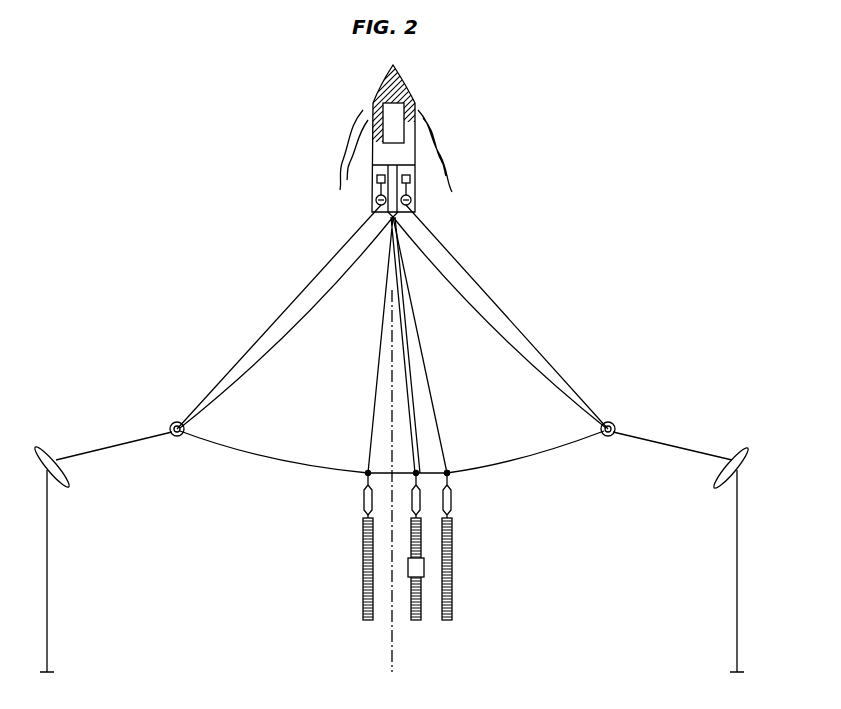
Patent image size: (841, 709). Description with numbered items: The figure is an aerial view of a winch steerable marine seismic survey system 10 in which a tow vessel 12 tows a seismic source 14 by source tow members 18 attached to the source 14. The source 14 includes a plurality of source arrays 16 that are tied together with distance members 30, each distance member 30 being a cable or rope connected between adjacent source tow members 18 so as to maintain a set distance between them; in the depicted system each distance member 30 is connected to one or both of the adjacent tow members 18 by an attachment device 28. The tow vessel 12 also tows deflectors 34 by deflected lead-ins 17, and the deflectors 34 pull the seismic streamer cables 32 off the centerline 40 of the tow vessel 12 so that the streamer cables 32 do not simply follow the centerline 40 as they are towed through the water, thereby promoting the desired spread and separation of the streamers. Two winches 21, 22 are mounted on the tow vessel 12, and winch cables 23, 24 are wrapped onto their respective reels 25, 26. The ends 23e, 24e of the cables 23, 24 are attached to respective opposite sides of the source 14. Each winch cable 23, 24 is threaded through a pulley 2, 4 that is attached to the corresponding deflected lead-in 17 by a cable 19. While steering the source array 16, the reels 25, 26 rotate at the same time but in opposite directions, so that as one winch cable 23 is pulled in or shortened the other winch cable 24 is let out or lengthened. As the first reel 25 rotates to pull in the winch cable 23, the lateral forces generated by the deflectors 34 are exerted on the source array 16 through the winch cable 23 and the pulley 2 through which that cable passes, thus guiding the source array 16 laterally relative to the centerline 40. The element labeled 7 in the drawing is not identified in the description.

The marine seismic survey system 10 is at (557, 122).
The tow vessel 12 is at (386, 96).
The winch 21 is at (370, 188).
The winch 22 is at (417, 188).
The reel 25 is at (375, 201).
The reel 26 is at (410, 201).
The winch cable 23 is at (303, 316).
The winch cable 24 is at (474, 302).
The source tow member 18 is at (425, 373).
The attachment device 28 is at (419, 467).
The end of winch cable 23e is at (365, 468).
The end of winch cable 24e is at (450, 468).
The pulley 2 is at (186, 425).
The pulley 4 is at (600, 425).
The cable 19 is at (172, 436).
The deflected lead-in 17 is at (124, 434).
The deflector 34 is at (50, 450).
The seismic streamer cable 32 is at (48, 592).
The distance member 30 is at (446, 477).
The sensor module 7 is at (410, 565).
The source array 16 is at (447, 608).
The source 14 is at (434, 624).
The centerline 40 is at (392, 652).